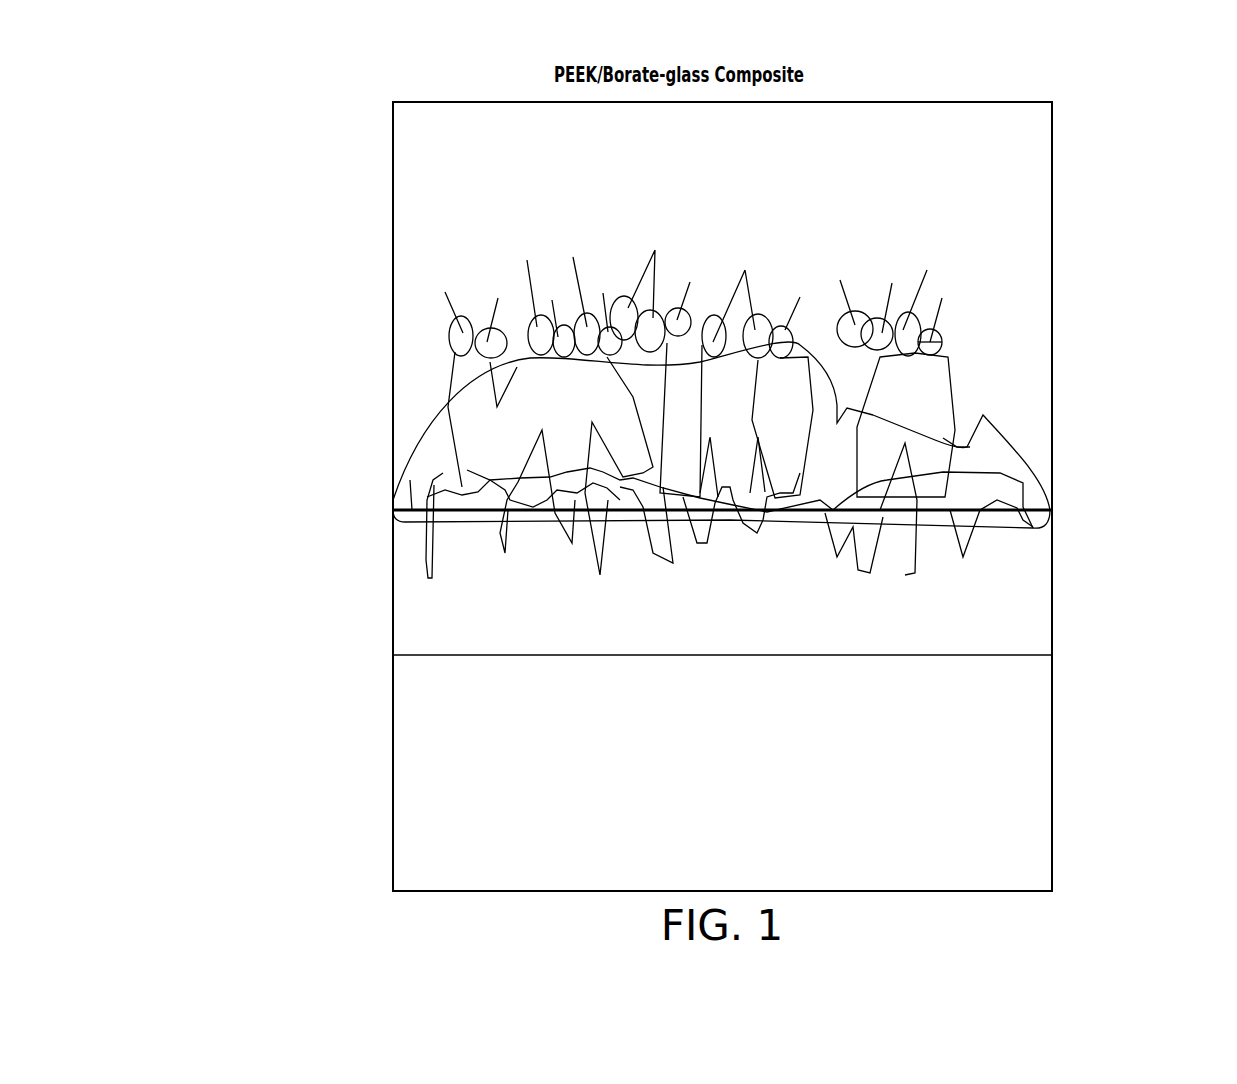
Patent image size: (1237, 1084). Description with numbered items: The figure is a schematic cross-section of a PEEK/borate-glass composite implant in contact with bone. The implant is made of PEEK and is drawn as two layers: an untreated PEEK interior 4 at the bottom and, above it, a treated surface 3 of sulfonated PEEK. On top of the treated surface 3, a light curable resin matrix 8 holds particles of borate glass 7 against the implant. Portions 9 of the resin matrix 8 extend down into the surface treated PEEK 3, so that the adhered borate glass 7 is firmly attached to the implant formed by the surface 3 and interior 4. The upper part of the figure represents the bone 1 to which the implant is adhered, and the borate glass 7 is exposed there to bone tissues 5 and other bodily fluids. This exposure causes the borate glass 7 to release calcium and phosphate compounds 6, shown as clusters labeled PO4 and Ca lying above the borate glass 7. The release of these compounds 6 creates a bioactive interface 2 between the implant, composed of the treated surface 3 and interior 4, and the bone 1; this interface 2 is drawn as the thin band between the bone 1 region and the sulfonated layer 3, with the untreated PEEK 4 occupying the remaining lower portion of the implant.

The bone 1 is at (1061, 446).
The bioactive interface 2 is at (1061, 550).
The treated surface 3 is at (1061, 655).
The untreated PEEK interior 4 is at (1061, 667).
The bone tissues 5 is at (427, 164).
The calcium and phosphate compounds 6 is at (593, 343).
The borate glass 7 is at (462, 446).
The light curable resin matrix 8 is at (438, 480).
The portions of the resin matrix 9 is at (427, 570).